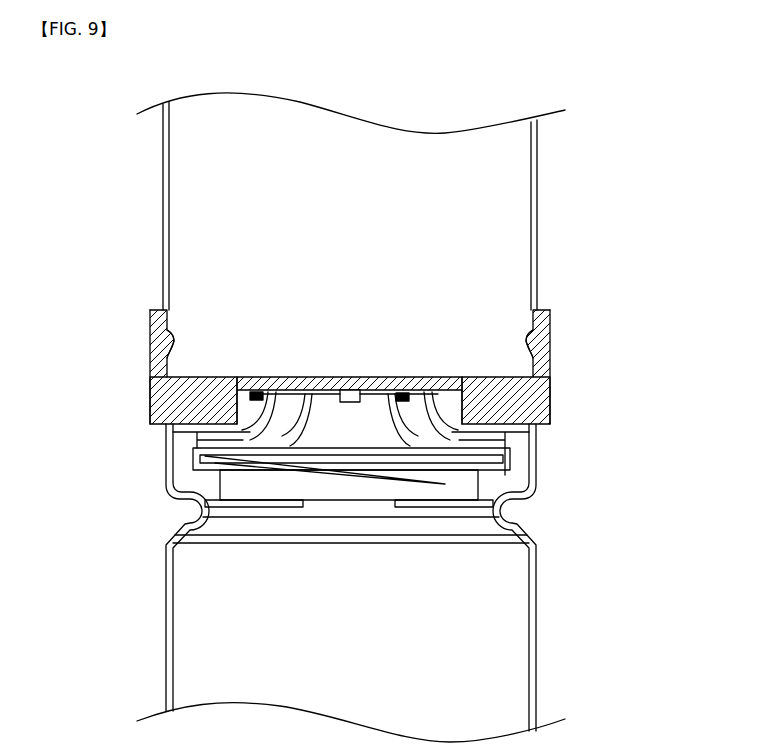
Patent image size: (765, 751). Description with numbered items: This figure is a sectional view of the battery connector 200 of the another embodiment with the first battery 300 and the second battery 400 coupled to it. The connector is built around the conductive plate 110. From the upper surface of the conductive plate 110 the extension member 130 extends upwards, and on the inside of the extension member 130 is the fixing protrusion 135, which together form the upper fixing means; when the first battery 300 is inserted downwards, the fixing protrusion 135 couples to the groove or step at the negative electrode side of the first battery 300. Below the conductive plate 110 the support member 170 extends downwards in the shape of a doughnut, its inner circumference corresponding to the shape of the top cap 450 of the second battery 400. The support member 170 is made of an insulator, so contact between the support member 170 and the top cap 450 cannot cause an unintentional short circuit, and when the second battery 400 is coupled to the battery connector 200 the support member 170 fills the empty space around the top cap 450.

The conductive plate 110 is at (458, 385).
The extension member 130 is at (150, 323).
The fixing protrusion 135 is at (552, 345).
The support member 170 is at (150, 402).
The battery connector 200 is at (382, 376).
The first battery 300 is at (517, 222).
The second battery 400 is at (537, 625).
The top cap 450 is at (193, 460).